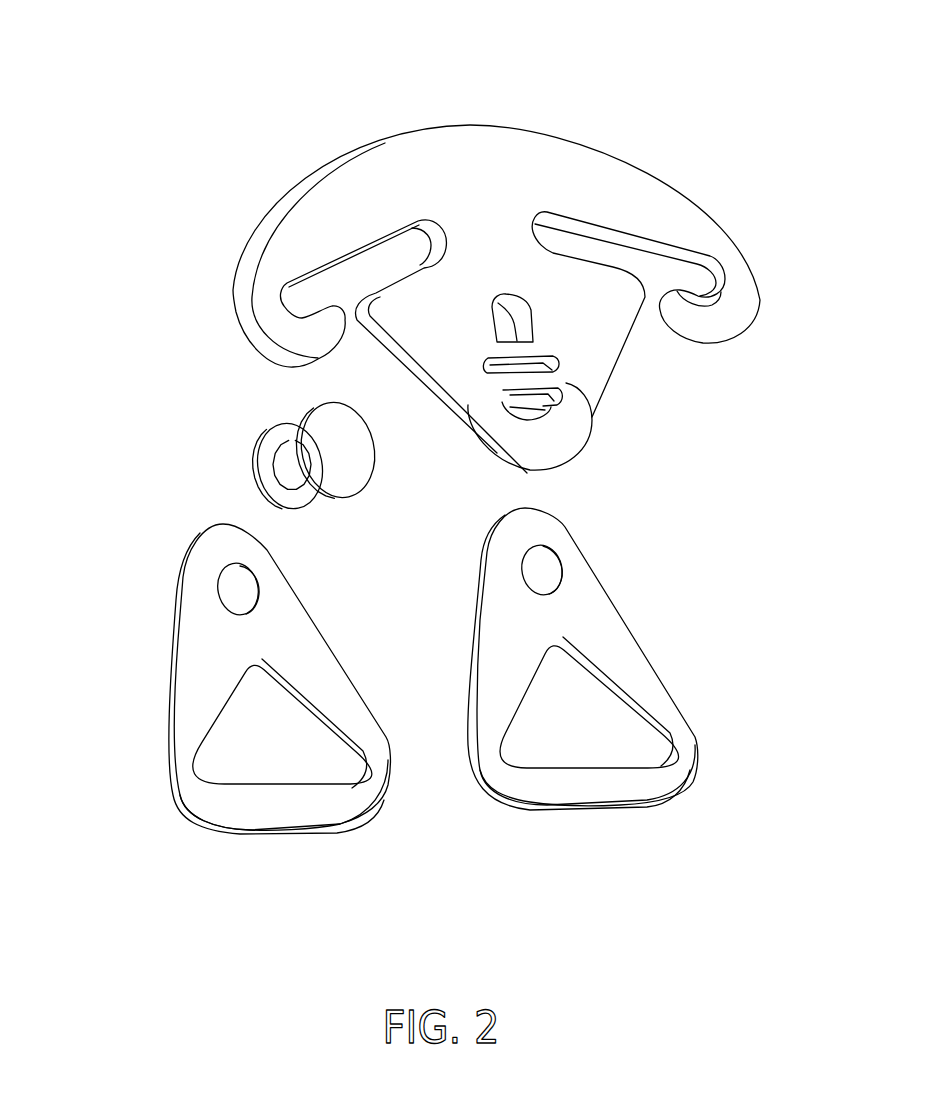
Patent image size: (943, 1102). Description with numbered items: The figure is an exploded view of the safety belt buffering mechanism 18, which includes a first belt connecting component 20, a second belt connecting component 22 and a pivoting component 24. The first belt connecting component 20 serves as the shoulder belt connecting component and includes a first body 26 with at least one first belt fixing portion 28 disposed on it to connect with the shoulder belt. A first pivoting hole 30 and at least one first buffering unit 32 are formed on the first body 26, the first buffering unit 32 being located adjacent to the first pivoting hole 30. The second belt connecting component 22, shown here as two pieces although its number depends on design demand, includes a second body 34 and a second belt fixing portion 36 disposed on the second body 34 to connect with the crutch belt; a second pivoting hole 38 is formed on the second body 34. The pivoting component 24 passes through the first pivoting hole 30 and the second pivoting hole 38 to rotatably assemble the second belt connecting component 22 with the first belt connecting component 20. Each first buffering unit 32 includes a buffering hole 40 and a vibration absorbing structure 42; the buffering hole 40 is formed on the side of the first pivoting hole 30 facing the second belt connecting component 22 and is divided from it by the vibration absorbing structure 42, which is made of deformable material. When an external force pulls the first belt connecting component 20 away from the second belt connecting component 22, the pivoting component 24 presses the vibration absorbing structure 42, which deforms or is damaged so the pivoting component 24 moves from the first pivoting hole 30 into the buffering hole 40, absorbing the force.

The safety belt buffering mechanism 18 is at (714, 71).
The first belt connecting component 20 is at (514, 293).
The second belt connecting component 22 is at (428, 671).
The pivoting component 24 is at (285, 469).
The first body 26 is at (608, 347).
The first belt fixing portion 28 is at (320, 216).
The first pivoting hole 30 is at (506, 300).
The first buffering unit 32 is at (402, 412).
The second body 34 is at (192, 703).
The second belt fixing portion 36 is at (192, 773).
The second pivoting hole 38 is at (262, 576).
The buffering hole 40 is at (500, 374).
The vibration absorbing structure 42 is at (507, 350).